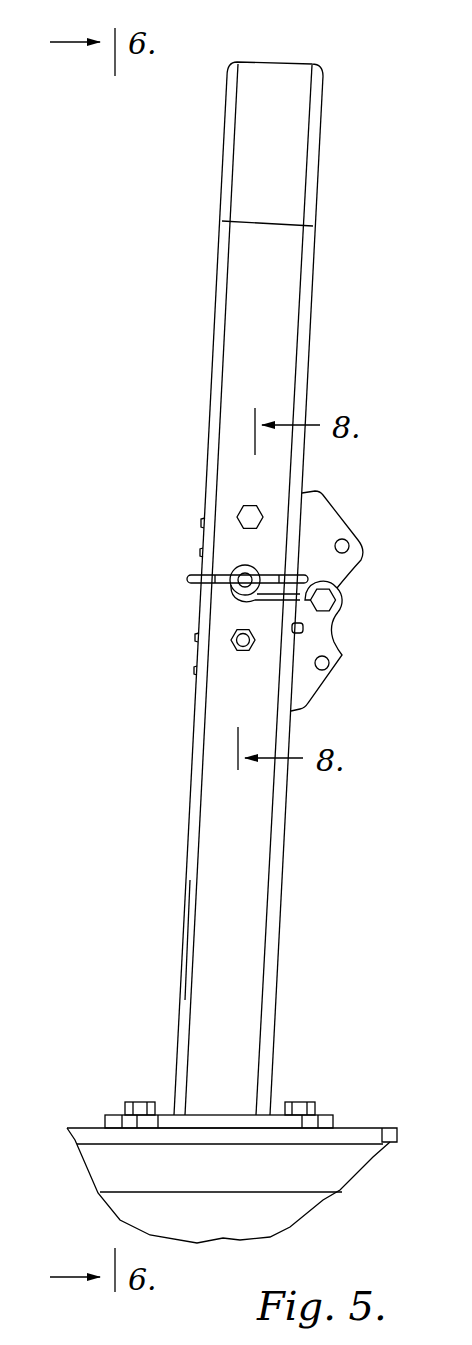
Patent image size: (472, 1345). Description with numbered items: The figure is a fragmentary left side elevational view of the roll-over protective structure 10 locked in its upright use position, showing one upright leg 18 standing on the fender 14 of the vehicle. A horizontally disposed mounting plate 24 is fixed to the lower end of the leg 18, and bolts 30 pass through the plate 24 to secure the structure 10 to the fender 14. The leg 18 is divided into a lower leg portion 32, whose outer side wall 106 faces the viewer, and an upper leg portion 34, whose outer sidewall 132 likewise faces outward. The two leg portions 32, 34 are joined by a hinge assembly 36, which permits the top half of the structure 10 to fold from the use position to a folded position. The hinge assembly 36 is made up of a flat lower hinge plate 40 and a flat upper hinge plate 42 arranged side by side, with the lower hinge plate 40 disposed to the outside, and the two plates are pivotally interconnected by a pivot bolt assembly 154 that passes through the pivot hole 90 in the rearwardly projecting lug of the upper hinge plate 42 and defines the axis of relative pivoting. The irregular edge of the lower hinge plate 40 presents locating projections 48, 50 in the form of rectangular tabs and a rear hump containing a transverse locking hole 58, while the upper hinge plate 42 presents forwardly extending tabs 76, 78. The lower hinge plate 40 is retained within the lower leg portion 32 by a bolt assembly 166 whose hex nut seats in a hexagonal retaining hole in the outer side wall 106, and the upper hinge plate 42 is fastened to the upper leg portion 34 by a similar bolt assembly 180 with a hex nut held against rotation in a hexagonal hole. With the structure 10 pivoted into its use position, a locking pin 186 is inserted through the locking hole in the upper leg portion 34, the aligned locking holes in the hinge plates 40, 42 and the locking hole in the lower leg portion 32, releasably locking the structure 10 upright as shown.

The roll-over protective structure 10 is at (283, 50).
The fender 14 is at (372, 1136).
The upright leg 18 is at (312, 352).
The mounting plate 24 is at (228, 1118).
The bolt 30 is at (303, 1105).
The lower leg portion 32 is at (275, 863).
The upper leg portion 34 is at (288, 289).
The hinge assembly 36 is at (366, 591).
The lower hinge plate 40 is at (318, 696).
The upper hinge plate 42 is at (341, 501).
The locating projection 48 is at (196, 672).
The locating projection 50 is at (196, 637).
The locking hole 58 is at (326, 662).
The projection 76 is at (198, 554).
The projection 78 is at (200, 521).
The pivot hole 90 is at (347, 548).
The outer side wall 106 is at (202, 904).
The outer sidewall 132 is at (245, 338).
The pivot bolt assembly 154 is at (330, 605).
The bolt assembly 166 is at (238, 642).
The bolt assembly 180 is at (250, 510).
The locking pin 186 is at (188, 579).